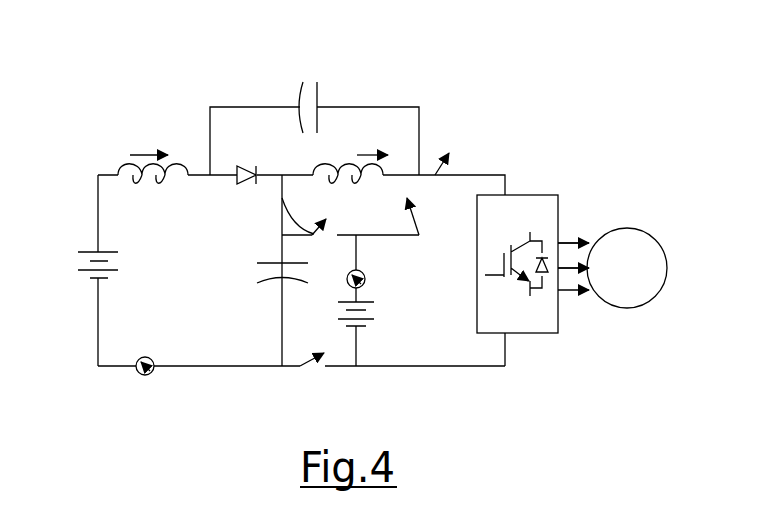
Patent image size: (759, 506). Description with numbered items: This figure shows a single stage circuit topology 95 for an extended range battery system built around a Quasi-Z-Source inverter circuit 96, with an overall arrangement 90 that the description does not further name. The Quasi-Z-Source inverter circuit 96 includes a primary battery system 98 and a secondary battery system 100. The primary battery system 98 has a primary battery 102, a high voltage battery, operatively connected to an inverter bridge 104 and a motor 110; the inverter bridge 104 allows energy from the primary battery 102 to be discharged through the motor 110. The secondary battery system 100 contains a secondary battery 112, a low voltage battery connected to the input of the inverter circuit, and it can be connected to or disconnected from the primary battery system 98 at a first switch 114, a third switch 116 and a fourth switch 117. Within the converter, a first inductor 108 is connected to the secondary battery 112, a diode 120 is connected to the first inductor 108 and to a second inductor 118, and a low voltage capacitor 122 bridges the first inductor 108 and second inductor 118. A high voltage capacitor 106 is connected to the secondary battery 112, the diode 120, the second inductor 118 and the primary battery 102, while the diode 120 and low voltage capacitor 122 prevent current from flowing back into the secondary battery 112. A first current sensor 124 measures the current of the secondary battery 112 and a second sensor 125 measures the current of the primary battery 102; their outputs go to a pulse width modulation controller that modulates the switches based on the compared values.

The vehicle electrical system 90 is at (614, 84).
The single stage circuit topology 95 is at (587, 49).
The Quasi-Z-Source inverter circuit 96 is at (385, 62).
The primary battery system 98 is at (547, 172).
The secondary battery system 100 is at (85, 343).
The primary battery 102 is at (364, 327).
The inverter bridge 104 is at (541, 335).
The second energy storage device HV capacitor 106 is at (271, 281).
The first inductor 108 is at (181, 161).
The motor 110 is at (650, 233).
The secondary battery 112 is at (90, 251).
The first switch 114 is at (412, 197).
The third switch 116 is at (437, 172).
The fourth switch 117 is at (282, 198).
The second inductor 118 is at (344, 162).
The diode 120 is at (282, 198).
The first energy storage device LV capacitor 122 is at (320, 97).
The first current sensor 124 is at (156, 373).
The second sensor 125 is at (365, 279).